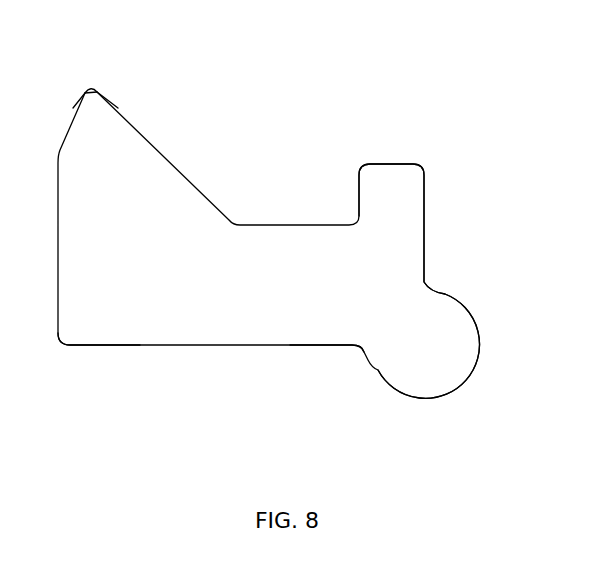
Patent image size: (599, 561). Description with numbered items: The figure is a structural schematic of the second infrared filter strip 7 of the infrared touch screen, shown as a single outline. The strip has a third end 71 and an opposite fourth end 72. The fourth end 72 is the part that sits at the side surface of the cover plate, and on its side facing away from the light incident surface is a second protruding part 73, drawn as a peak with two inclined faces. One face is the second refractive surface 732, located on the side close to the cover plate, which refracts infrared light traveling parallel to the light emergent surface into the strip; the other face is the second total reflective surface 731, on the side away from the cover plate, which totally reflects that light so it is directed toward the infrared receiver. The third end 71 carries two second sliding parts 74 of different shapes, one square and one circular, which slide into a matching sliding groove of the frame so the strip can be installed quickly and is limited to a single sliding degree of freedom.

The second infrared filter strip 7 is at (277, 117).
The third end 71 is at (315, 302).
The fourth end 72 is at (138, 313).
The second protruding part 73 is at (38, 51).
The second total reflective surface 731 is at (118, 108).
The second refractive surface 732 is at (73, 108).
The second sliding parts 74 is at (400, 194).